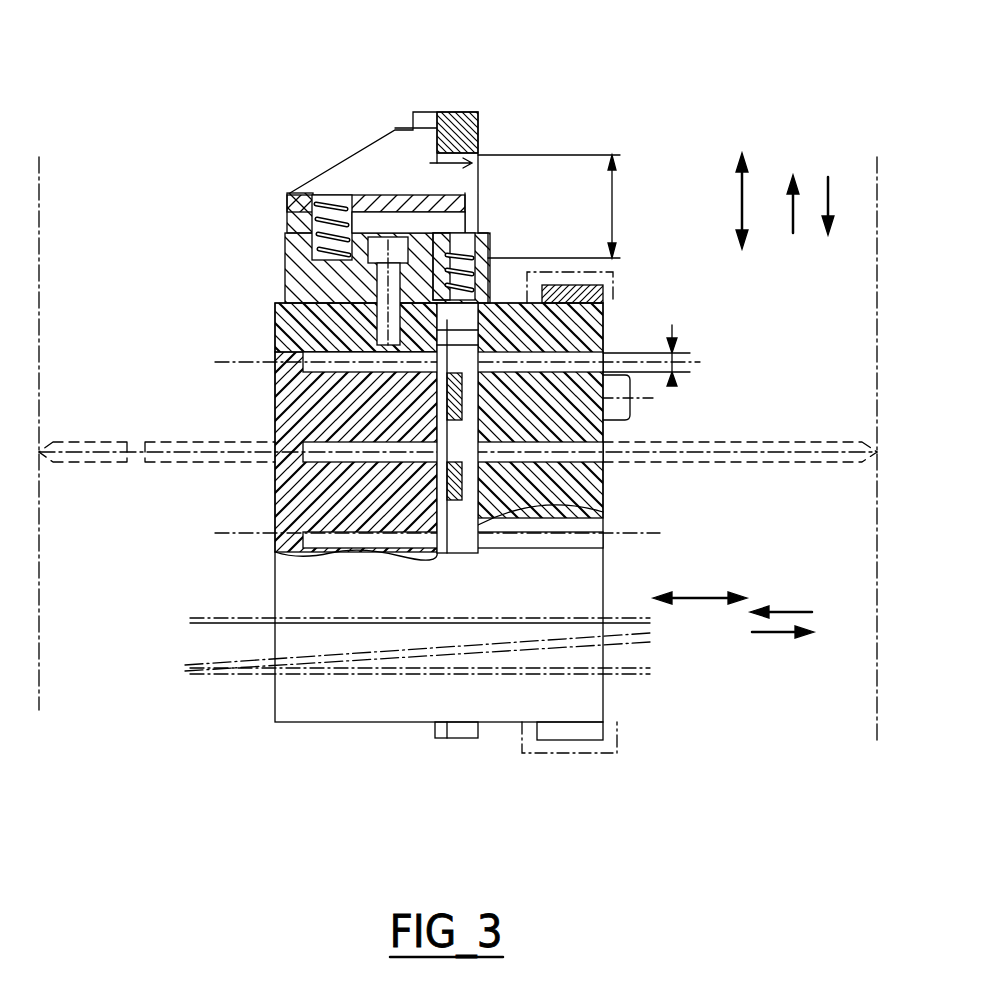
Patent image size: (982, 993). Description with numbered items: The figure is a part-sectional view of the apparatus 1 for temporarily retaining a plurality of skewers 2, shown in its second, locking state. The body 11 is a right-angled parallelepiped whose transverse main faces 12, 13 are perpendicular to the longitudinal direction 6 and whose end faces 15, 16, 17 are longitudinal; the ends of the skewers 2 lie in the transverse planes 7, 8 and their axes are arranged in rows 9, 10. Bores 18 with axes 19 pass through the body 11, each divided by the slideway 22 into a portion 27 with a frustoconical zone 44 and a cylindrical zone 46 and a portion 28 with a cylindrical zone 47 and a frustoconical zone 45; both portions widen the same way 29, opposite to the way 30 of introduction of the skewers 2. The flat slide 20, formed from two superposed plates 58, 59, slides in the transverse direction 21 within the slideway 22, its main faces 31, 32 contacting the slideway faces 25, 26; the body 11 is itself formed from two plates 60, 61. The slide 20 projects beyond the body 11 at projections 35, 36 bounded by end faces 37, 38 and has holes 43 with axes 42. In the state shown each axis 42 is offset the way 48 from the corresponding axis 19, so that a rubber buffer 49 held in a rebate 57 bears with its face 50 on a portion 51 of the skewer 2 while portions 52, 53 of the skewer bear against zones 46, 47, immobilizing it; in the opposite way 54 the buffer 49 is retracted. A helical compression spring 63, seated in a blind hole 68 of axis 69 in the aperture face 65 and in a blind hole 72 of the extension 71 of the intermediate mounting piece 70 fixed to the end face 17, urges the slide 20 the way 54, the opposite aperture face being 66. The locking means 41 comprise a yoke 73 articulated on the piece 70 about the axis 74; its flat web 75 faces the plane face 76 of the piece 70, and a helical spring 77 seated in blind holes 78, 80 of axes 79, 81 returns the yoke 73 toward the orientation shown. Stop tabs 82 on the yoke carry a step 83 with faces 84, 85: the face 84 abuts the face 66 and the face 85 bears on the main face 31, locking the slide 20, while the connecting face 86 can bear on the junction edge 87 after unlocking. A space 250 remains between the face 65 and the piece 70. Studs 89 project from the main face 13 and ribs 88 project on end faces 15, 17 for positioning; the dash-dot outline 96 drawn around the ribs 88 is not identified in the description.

The apparatus 1 is at (232, 260).
The skewer 2 is at (160, 470).
The longitudinal direction 6 is at (702, 598).
The transverse plane 7 is at (42, 620).
The transverse plane 8 is at (879, 650).
The rectilinear row 9 is at (560, 206).
The rectilinear row 10 is at (431, 151).
The body 11 is at (265, 715).
The main face 12 is at (272, 595).
The main face 13 is at (604, 575).
The end face 15 is at (290, 722).
The end face 16 is at (335, 722).
The end face 17 is at (275, 310).
The bore 18 is at (600, 330).
The axis 19 is at (640, 390).
The slide 20 is at (447, 742).
The transverse direction 21 is at (742, 200).
The slideway 22 is at (455, 560).
The face 25 is at (437, 565).
The face 26 is at (490, 548).
The portion 27 is at (295, 402).
The portion 28 is at (627, 418).
The way 29 is at (787, 587).
The way 30 is at (783, 655).
The main face 31 is at (437, 732).
The main face 32 is at (480, 730).
The projection 35 is at (472, 740).
The projection 36 is at (400, 128).
The end face 37 is at (440, 740).
The end face 38 is at (468, 108).
The locking means 41 is at (240, 155).
The axis 42 is at (672, 355).
The hole 43 is at (520, 312).
The frustoconical zone 44 is at (300, 362).
The frustoconical zone 45 is at (505, 396).
The cylindrical zone 46 is at (295, 455).
The cylindrical zone 47 is at (620, 340).
The way 48 is at (793, 215).
The buffer 49 is at (425, 408).
The face 50 is at (405, 383).
The portion 51 is at (482, 530).
The portion 52 is at (280, 500).
The portion 53 is at (610, 462).
The way 54 is at (828, 195).
The rebate 57 is at (604, 505).
The plate 58 is at (437, 712).
The plate 59 is at (478, 712).
The plate 60 is at (270, 642).
The plate 61 is at (604, 708).
The helical compression spring 63 is at (472, 262).
The face 65 is at (500, 280).
The face 66 is at (440, 183).
The blind hole 68 is at (418, 332).
The axis 69 is at (480, 212).
The intermediate mounting piece 70 is at (290, 250).
The extension 71 is at (475, 250).
The blind hole 72 is at (480, 245).
The yoke 73 is at (300, 195).
The axis 74 is at (392, 277).
The flat web 75 is at (300, 190).
The face 76 is at (290, 235).
The helical spring 77 is at (290, 220).
The blind hole 78 is at (292, 270).
The axis 79 is at (250, 302).
The blind hole 80 is at (330, 212).
The axis 81 is at (332, 152).
The stop tab 82 is at (355, 190).
The step 83 is at (480, 120).
The face 84 is at (480, 150).
The face 85 is at (448, 108).
The face 86 is at (480, 170).
The junction edge 87 is at (470, 108).
The rib 88 is at (572, 284).
The stud 89 is at (632, 402).
The pad outline 96 is at (615, 282).
The space 250 is at (300, 292).